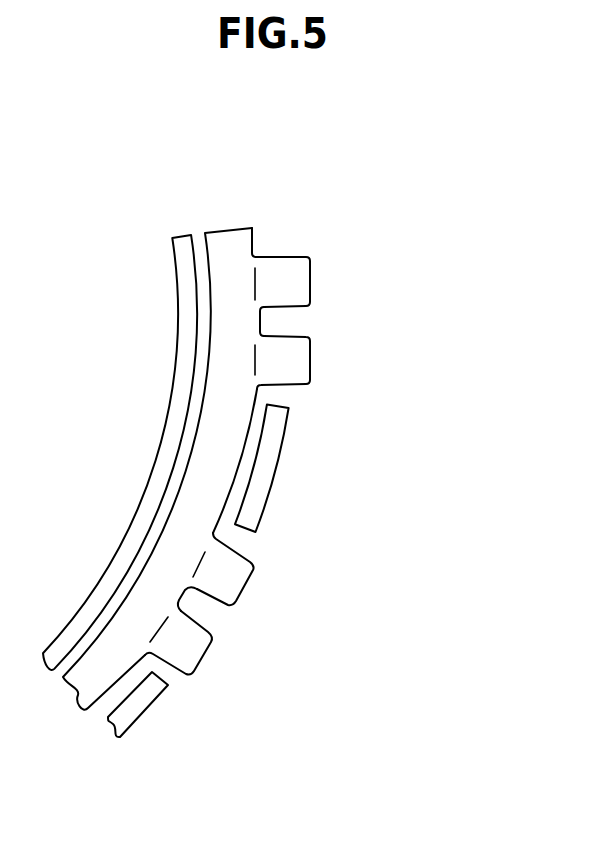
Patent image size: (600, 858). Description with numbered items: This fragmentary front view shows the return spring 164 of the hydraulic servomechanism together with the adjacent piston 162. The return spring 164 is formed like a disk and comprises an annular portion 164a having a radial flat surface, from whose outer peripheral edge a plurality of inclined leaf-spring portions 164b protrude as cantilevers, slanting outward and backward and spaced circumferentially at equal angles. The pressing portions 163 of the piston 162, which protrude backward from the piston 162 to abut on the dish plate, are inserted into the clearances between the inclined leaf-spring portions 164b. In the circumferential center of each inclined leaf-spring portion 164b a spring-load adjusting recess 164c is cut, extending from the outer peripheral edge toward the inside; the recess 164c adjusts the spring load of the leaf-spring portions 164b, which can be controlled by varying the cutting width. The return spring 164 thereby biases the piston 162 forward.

The piston 162 is at (168, 457).
The pressing portions 163 is at (268, 463).
The return spring 164 is at (285, 465).
The annular portion 164a is at (240, 252).
The inclined leaf-spring portions 164b is at (282, 283).
The spring-load adjusting recess 164c is at (290, 307).